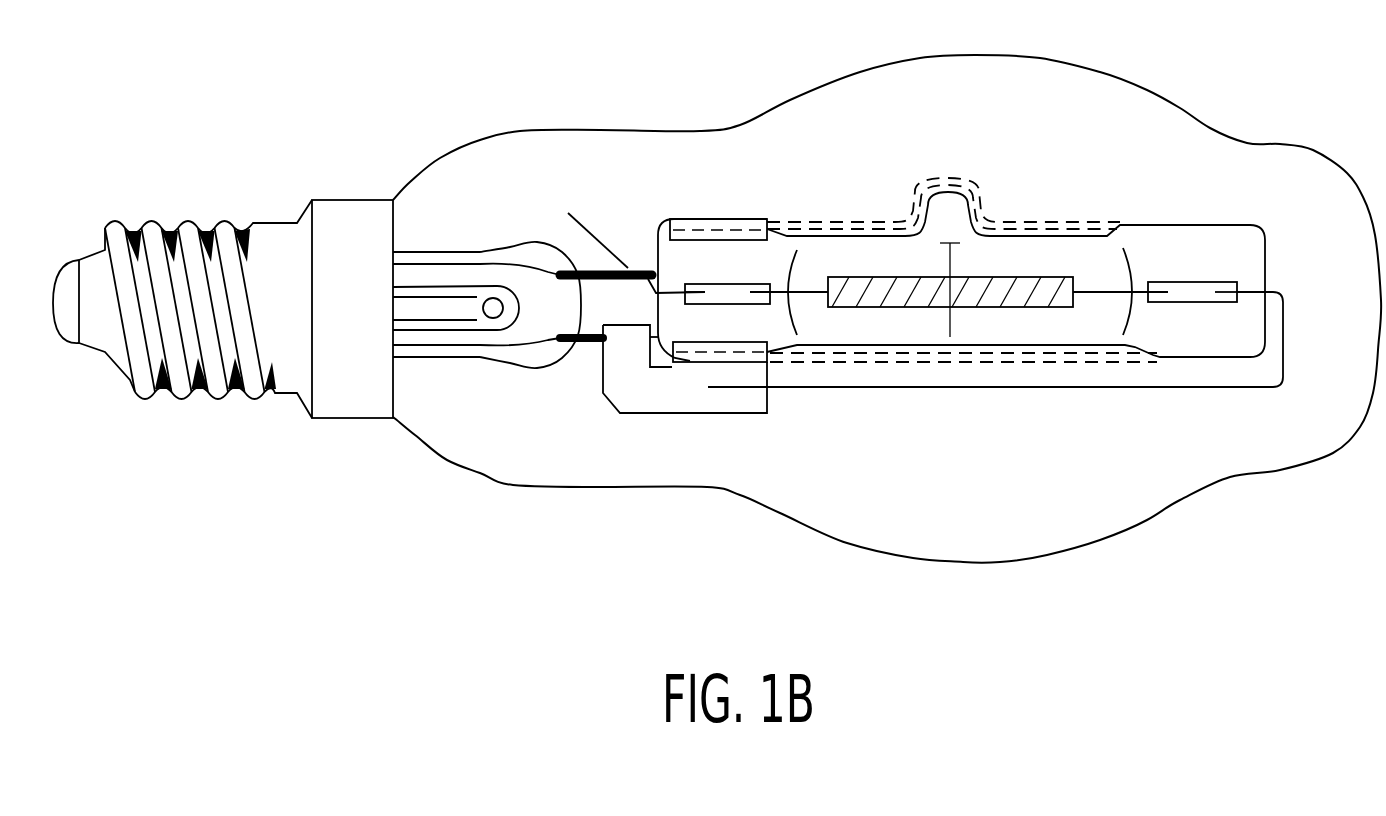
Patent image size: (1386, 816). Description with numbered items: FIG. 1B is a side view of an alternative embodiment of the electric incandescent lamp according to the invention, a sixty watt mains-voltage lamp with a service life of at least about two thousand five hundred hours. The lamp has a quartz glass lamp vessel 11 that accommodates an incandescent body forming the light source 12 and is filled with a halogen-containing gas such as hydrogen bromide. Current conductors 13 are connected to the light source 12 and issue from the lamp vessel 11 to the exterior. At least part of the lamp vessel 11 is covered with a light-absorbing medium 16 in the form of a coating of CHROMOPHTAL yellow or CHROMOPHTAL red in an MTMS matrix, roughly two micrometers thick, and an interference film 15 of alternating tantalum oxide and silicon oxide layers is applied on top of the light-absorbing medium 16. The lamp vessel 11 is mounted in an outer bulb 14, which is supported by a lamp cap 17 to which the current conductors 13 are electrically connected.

The lamp vessel 11 is at (1170, 232).
The light source 12 is at (1043, 307).
The current conductors 13 is at (818, 300).
The outer bulb 14 is at (607, 130).
The interference film 15 is at (989, 360).
The light-absorbing medium 16 is at (916, 355).
The lamp cap 17 is at (275, 240).